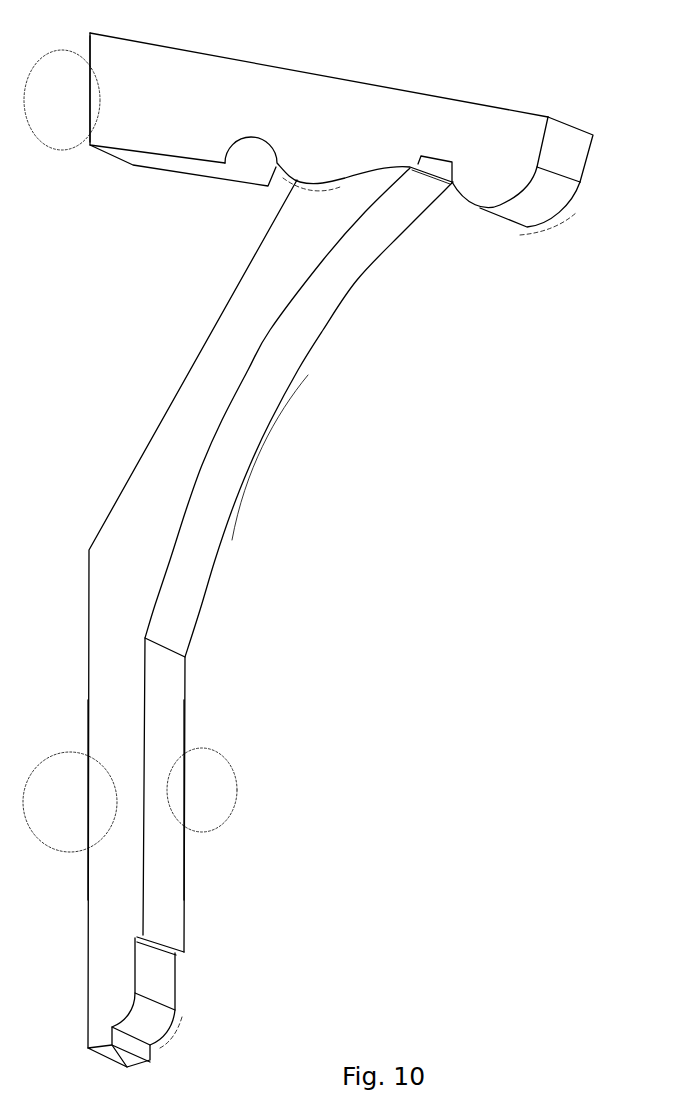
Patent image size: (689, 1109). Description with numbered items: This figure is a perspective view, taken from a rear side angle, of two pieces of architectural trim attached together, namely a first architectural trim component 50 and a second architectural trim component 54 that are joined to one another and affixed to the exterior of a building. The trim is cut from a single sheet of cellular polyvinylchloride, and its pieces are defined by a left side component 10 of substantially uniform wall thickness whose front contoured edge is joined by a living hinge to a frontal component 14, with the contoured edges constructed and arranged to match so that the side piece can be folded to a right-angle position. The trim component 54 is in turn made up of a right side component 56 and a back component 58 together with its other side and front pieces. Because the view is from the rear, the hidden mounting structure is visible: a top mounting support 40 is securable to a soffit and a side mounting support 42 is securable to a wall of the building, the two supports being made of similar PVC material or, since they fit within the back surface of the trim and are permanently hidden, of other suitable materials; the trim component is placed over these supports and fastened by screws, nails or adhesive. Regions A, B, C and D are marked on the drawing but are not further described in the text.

The left side component 10 is at (478, 112).
The frontal component 14 is at (489, 212).
The top mounting support 40 is at (172, 47).
The side mounting support 42 is at (86, 91).
The architectural trim component 50 is at (353, 63).
The architectural trim component 54 is at (270, 617).
The right side component 56 is at (185, 797).
The back component 58 is at (88, 793).
The region A is at (293, 188).
The region B is at (583, 218).
The region C is at (272, 457).
The region D is at (185, 1027).